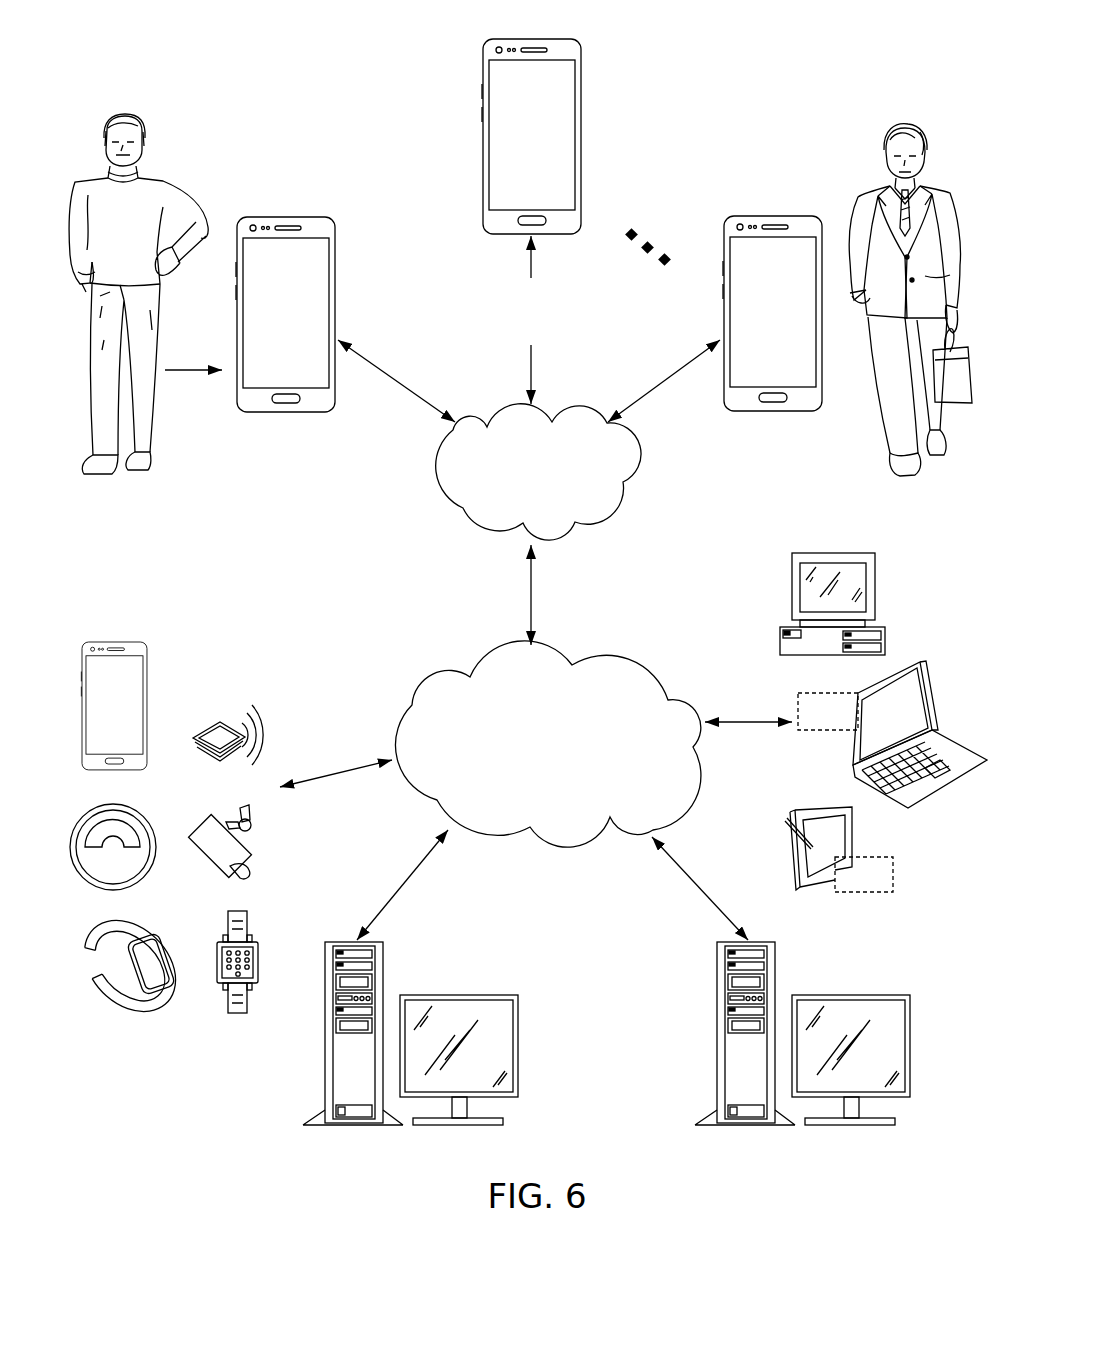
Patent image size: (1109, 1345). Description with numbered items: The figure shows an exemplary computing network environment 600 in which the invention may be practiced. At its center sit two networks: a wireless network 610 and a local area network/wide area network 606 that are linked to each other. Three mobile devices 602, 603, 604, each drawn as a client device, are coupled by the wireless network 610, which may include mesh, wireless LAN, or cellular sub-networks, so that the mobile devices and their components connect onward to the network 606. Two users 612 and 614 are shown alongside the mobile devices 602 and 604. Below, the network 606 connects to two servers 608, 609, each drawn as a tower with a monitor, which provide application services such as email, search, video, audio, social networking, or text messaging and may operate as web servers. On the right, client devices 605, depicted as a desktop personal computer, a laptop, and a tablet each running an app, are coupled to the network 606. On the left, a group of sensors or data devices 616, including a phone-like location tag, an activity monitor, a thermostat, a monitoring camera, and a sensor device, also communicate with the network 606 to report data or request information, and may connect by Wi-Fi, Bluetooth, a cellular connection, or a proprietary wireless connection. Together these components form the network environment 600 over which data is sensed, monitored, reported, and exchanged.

The computing network environment 600 is at (733, 57).
The mobile device 602 is at (304, 217).
The mobile device 603 is at (483, 135).
The mobile device 604 is at (790, 216).
The client devices 605 is at (936, 601).
The local area network/wide area network 606 is at (432, 676).
The server 608 is at (458, 995).
The server 609 is at (852, 995).
The wireless network 610 is at (432, 481).
The user 612 is at (150, 432).
The user 614 is at (893, 417).
The sensors or data devices 616 is at (112, 604).